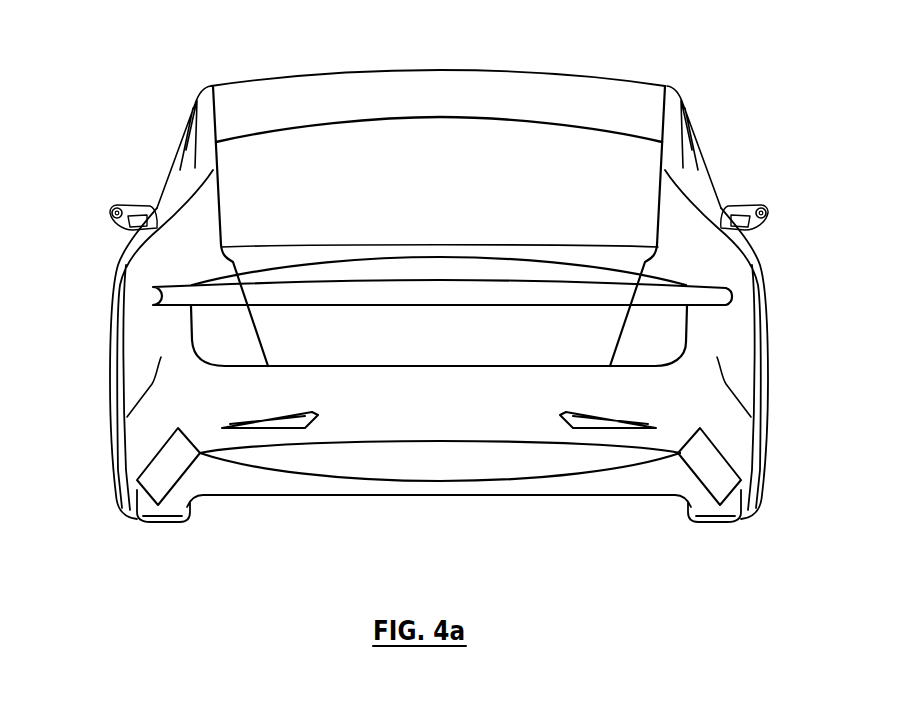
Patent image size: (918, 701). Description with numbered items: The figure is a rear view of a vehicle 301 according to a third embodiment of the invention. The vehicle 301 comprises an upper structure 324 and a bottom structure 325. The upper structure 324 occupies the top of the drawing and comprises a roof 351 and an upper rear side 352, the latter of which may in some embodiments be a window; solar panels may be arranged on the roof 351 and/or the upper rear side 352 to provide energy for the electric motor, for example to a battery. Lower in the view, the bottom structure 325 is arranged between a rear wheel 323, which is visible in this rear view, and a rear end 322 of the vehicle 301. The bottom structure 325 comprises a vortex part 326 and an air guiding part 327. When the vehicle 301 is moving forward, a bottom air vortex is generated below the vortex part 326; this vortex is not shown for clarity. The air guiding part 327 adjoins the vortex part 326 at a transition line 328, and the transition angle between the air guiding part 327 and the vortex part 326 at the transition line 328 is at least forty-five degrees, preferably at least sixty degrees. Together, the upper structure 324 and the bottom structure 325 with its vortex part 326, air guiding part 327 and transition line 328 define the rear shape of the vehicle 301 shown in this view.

The vehicle 301 is at (178, 35).
The roof 351 is at (530, 92).
The upper structure 324 is at (258, 170).
The upper rear side 352 is at (555, 188).
The rear end 322 is at (583, 355).
The rear wheel 323 is at (112, 472).
The transition line 328 is at (402, 480).
The vortex part 326 is at (372, 470).
The bottom structure 325 is at (512, 522).
The air guiding part 327 is at (290, 487).